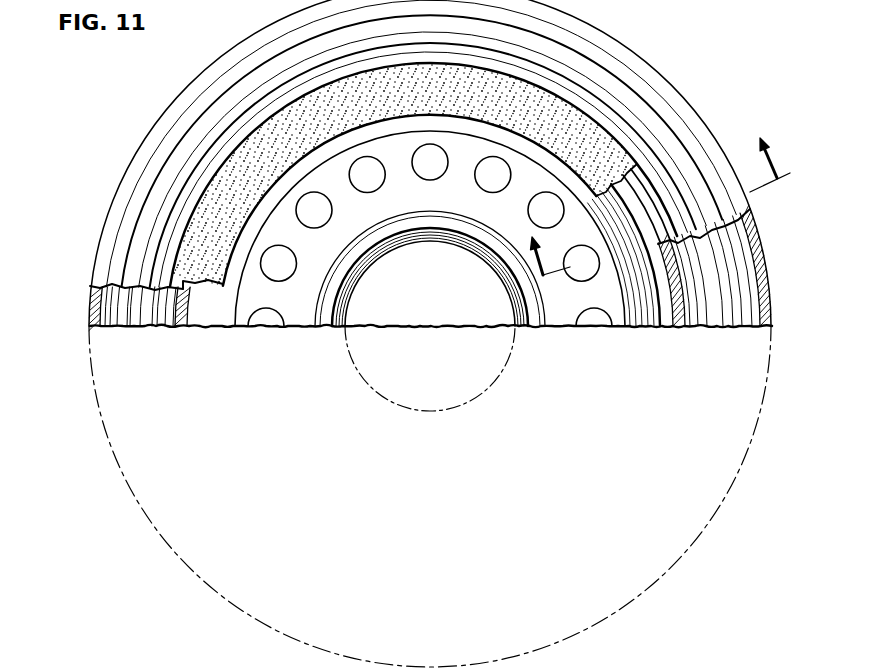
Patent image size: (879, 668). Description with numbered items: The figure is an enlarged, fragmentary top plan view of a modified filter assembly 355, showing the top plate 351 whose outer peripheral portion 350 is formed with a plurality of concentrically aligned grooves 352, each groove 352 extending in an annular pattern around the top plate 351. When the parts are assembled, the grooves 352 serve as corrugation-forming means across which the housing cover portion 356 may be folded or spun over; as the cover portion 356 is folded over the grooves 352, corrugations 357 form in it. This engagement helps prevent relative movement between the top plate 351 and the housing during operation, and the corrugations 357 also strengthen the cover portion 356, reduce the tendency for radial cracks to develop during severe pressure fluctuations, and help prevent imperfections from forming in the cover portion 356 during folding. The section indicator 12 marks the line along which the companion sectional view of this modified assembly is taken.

The support ring 350 is at (713, 275).
The perforated disc 351 is at (565, 328).
The annular grooves 352 is at (110, 324).
The filter assembly 355 is at (690, 78).
The outer filter layer 356 is at (687, 137).
The support layers 357 is at (676, 188).
The section line 12- 12 is at (670, 224).